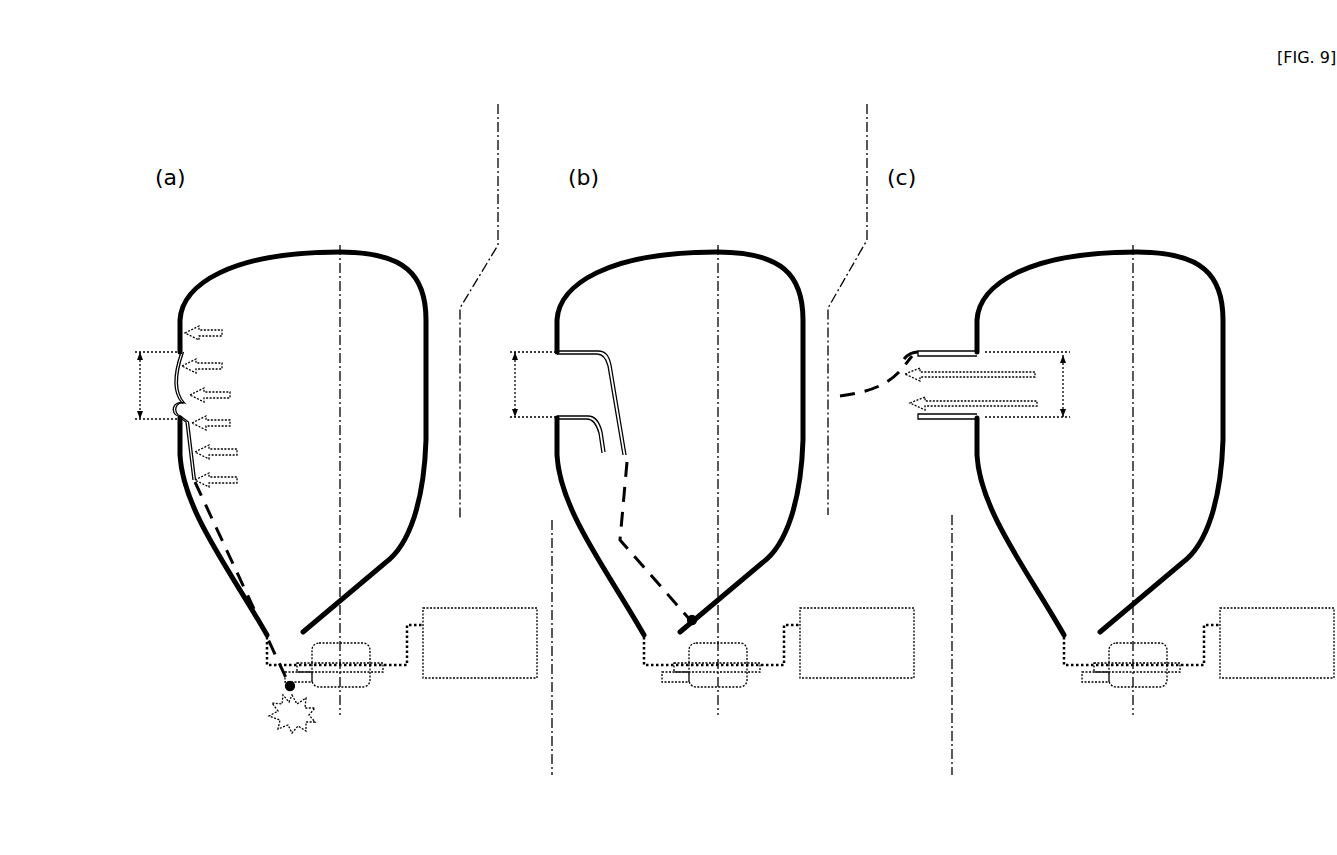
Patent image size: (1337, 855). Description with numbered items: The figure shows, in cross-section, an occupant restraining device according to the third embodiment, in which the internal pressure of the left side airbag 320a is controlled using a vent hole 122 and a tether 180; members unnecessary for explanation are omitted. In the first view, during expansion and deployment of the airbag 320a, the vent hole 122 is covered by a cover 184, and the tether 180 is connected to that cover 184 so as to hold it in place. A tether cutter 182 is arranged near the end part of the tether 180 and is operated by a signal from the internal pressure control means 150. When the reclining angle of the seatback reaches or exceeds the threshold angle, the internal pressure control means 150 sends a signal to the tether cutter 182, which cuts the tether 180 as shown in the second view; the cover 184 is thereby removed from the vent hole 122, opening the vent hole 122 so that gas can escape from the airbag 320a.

The left side airbag 320a is at (426, 252).
The vent hole 122 is at (601, 385).
The cover 184 is at (178, 381).
The tether 180 is at (223, 535).
The internal pressure control means 150 is at (481, 607).
The tether cutter 182 is at (350, 689).